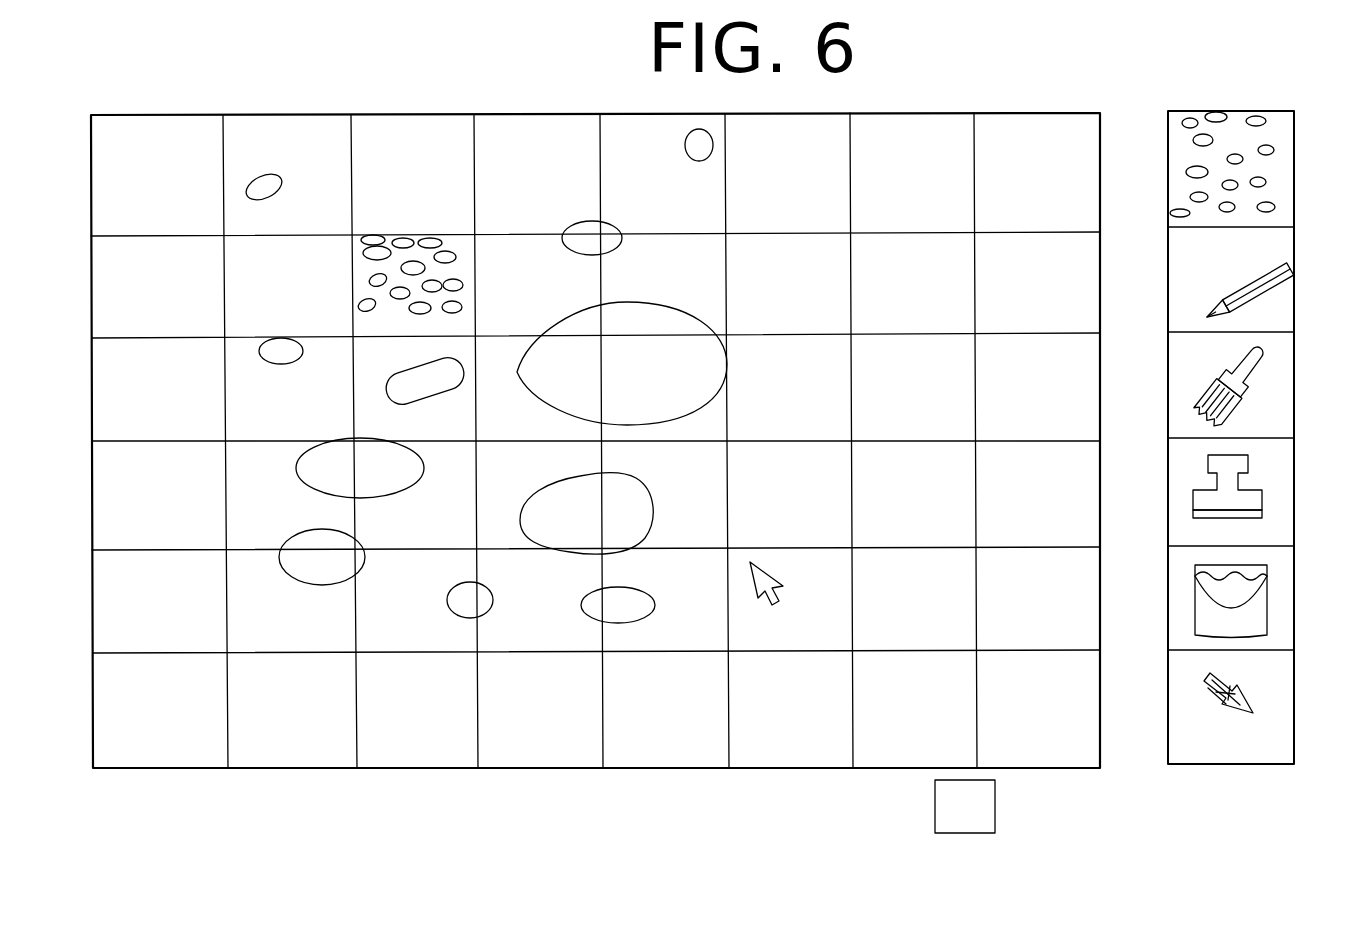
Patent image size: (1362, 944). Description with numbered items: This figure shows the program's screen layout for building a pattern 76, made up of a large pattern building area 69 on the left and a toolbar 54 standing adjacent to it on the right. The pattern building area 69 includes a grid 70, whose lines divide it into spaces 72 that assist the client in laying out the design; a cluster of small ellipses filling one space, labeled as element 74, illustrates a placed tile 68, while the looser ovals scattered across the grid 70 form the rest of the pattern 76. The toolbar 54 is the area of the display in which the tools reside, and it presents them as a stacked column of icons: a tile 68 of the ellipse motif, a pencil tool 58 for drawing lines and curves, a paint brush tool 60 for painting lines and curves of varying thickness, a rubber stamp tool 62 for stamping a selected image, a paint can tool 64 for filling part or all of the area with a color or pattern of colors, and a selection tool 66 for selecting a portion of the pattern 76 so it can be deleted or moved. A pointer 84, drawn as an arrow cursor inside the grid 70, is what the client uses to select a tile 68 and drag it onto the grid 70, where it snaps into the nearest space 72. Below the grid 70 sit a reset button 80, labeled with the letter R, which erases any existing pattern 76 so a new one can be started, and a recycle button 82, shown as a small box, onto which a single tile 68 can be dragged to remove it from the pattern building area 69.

The toolbar 54 is at (1236, 792).
The pencil tool 58 is at (1243, 287).
The paint brush tool 60 is at (1258, 362).
The rubber stamp tool 62 is at (1270, 495).
The paint can tool 64 is at (1262, 620).
The selection tool 66 is at (1255, 698).
The tile 68 is at (1275, 170).
The pattern building area 69 is at (288, 783).
The grid 70 is at (455, 792).
The space 72 is at (546, 740).
The patterned grid cell 74 is at (459, 242).
The pattern 76 is at (261, 115).
The reset button 80 is at (818, 866).
The recycle button 82 is at (980, 815).
The pointer 84 is at (774, 586).